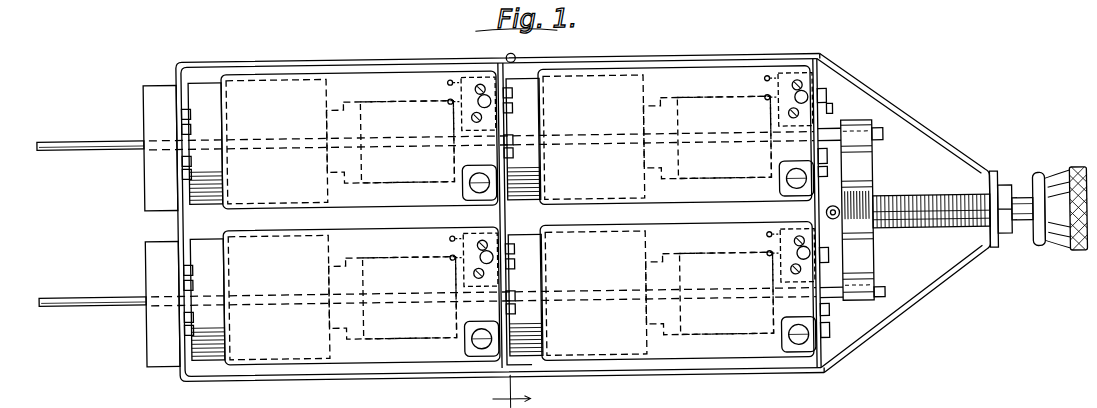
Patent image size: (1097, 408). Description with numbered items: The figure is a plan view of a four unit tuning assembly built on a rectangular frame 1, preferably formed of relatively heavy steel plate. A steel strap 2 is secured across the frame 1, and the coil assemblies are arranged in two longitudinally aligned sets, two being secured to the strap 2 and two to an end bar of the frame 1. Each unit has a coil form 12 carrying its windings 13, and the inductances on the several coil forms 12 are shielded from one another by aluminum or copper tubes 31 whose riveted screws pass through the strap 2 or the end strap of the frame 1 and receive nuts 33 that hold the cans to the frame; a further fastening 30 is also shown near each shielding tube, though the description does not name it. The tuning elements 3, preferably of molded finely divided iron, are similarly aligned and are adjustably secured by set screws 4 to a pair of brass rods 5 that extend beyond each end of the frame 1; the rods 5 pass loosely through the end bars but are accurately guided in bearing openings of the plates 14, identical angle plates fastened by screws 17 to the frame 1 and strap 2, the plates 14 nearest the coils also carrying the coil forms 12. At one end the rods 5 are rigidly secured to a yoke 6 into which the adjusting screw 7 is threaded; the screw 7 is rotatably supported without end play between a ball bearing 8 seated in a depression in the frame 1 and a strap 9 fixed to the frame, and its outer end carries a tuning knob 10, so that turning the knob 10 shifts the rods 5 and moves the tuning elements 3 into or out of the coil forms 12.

The rectangular frame 1 is at (687, 375).
The steel strap 2 is at (500, 62).
The tuning elements 3 is at (535, 166).
The set screws 4 is at (518, 391).
The brass rods 5 is at (113, 127).
The yoke 6 is at (865, 262).
The adjusting screw 7 is at (933, 193).
The ball bearing 8 is at (832, 215).
The strap 9 is at (912, 111).
The tuning knob 10 is at (1057, 188).
The coil form 12 is at (345, 258).
The windings 13 is at (420, 182).
The plates 14 is at (145, 100).
The screws 17 is at (834, 113).
The terminal post 30 is at (468, 177).
The tubes 31 is at (302, 87).
The nuts 33 is at (825, 94).